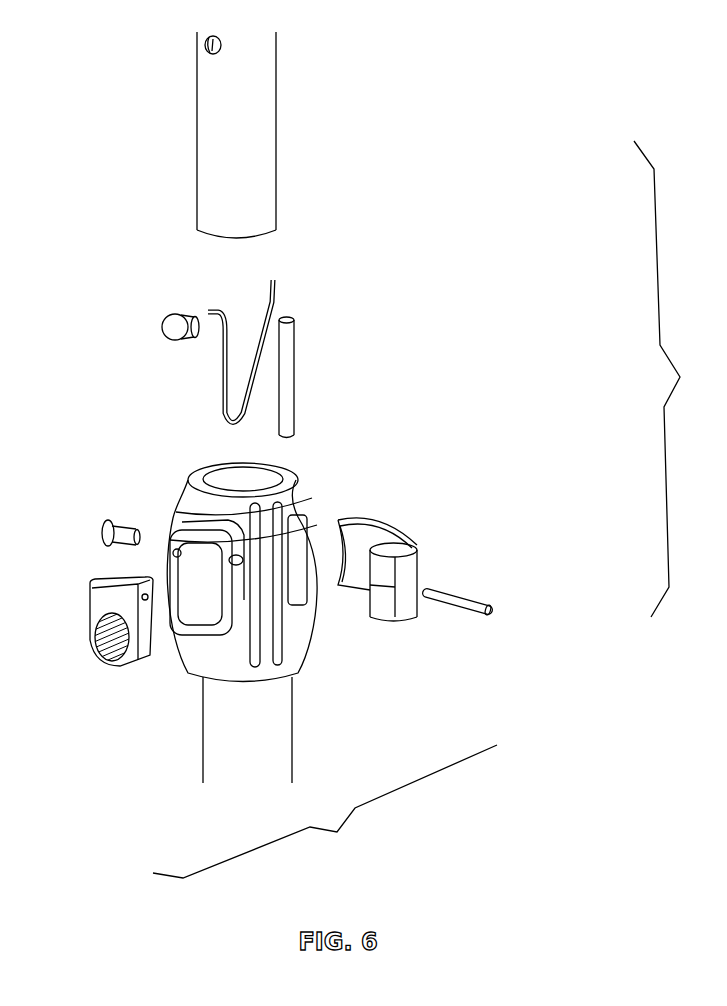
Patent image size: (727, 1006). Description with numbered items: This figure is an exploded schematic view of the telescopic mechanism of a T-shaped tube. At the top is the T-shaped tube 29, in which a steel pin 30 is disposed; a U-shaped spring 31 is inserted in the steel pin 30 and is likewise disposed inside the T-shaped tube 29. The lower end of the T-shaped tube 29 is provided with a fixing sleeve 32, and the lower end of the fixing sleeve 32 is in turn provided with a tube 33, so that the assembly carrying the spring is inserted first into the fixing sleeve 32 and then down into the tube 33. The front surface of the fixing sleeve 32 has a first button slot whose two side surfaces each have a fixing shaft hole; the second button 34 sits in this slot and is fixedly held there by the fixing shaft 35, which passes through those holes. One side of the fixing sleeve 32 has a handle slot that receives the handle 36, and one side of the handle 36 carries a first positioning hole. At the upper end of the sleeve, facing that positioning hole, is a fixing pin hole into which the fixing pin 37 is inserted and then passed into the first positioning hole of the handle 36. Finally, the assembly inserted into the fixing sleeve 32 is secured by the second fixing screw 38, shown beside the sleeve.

The T-shaped tube 29 is at (276, 92).
The steel pin 30 is at (165, 328).
The U-shaped spring 31 is at (273, 282).
The fixing sleeve 32 is at (197, 470).
The tube 33 is at (292, 725).
The second button 34 is at (118, 662).
The fixing shaft 35 is at (490, 607).
The handle 36 is at (408, 532).
The fixing pin 37 is at (294, 378).
The second fixing screw 38 is at (103, 520).